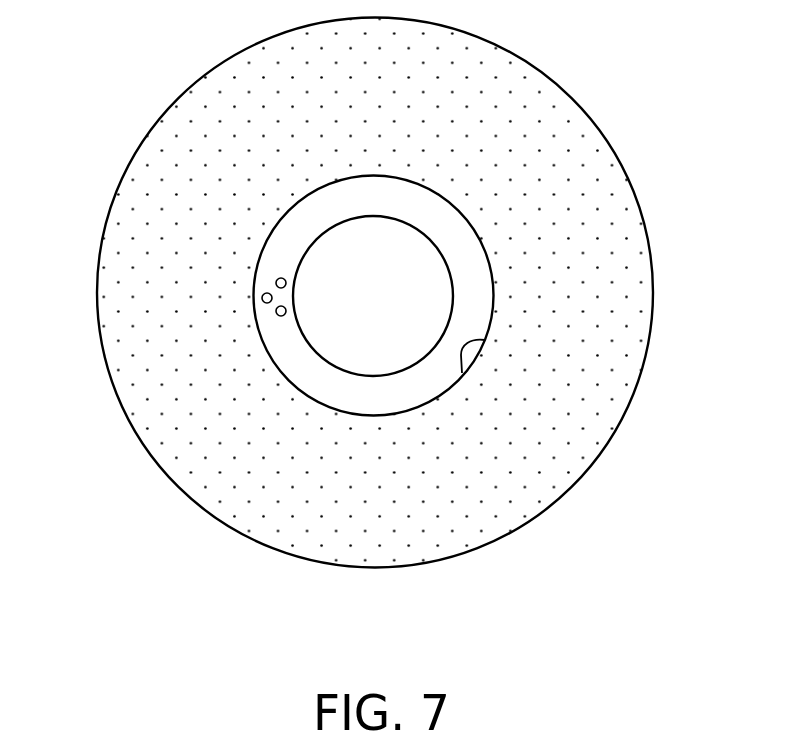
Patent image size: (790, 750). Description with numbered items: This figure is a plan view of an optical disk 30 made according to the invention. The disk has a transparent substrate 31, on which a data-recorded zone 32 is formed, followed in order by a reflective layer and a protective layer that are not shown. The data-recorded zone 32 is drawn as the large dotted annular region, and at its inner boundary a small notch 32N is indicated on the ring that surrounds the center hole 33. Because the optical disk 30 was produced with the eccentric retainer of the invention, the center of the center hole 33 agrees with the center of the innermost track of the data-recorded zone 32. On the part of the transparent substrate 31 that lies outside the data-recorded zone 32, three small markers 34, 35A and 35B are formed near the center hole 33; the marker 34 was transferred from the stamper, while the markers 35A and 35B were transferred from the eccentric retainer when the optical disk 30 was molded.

The optical disk 30 is at (718, 129).
The transparent substrate 31 is at (643, 235).
The data-recorded zone 32 is at (633, 325).
The notch 32N is at (462, 373).
The center hole 33 is at (394, 357).
The marker 34 is at (264, 303).
The marker 35A is at (276, 283).
The marker 35B is at (281, 317).